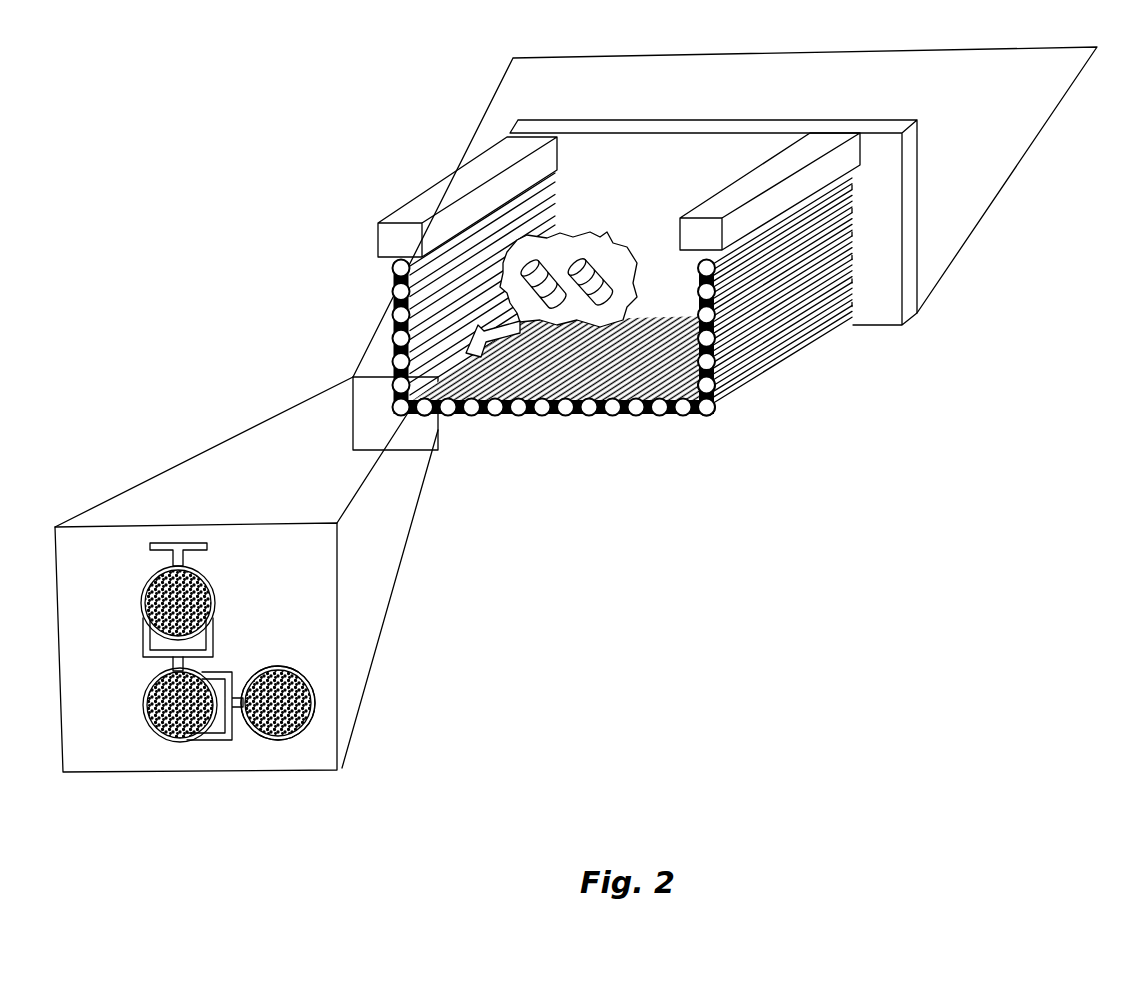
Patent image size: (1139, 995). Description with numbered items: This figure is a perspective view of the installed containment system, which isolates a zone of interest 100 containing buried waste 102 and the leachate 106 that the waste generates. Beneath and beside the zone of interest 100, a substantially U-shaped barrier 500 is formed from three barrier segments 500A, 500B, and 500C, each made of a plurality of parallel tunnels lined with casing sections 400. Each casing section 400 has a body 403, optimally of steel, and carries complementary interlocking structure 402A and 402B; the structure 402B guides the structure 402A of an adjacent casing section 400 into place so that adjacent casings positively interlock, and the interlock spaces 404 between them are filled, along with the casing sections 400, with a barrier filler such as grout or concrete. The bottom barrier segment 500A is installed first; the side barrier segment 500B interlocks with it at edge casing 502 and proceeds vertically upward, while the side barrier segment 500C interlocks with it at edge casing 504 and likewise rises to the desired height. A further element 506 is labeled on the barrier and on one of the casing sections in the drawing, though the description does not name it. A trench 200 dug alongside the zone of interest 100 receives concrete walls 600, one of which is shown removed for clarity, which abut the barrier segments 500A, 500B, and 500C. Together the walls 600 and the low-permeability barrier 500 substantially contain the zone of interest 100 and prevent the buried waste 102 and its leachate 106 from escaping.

The zone of interest 100 is at (607, 412).
The buried waste 102 is at (520, 263).
The leachate 106 is at (478, 349).
The trench 200 is at (968, 198).
The casing sections 400 is at (277, 742).
The complementary interlocking structure 402A is at (215, 630).
The complementary interlocking structure 402B is at (207, 552).
The body 403 is at (292, 715).
The interlock spaces 404 is at (227, 687).
The barrier 500 is at (541, 413).
The barrier segment 500A is at (497, 420).
The barrier segment 500B is at (393, 344).
The barrier segment 500C is at (725, 362).
The edge casing 502 is at (427, 430).
The edge casing 504 is at (705, 416).
The actuator element 506 is at (716, 378).
The concrete walls 600 is at (732, 153).